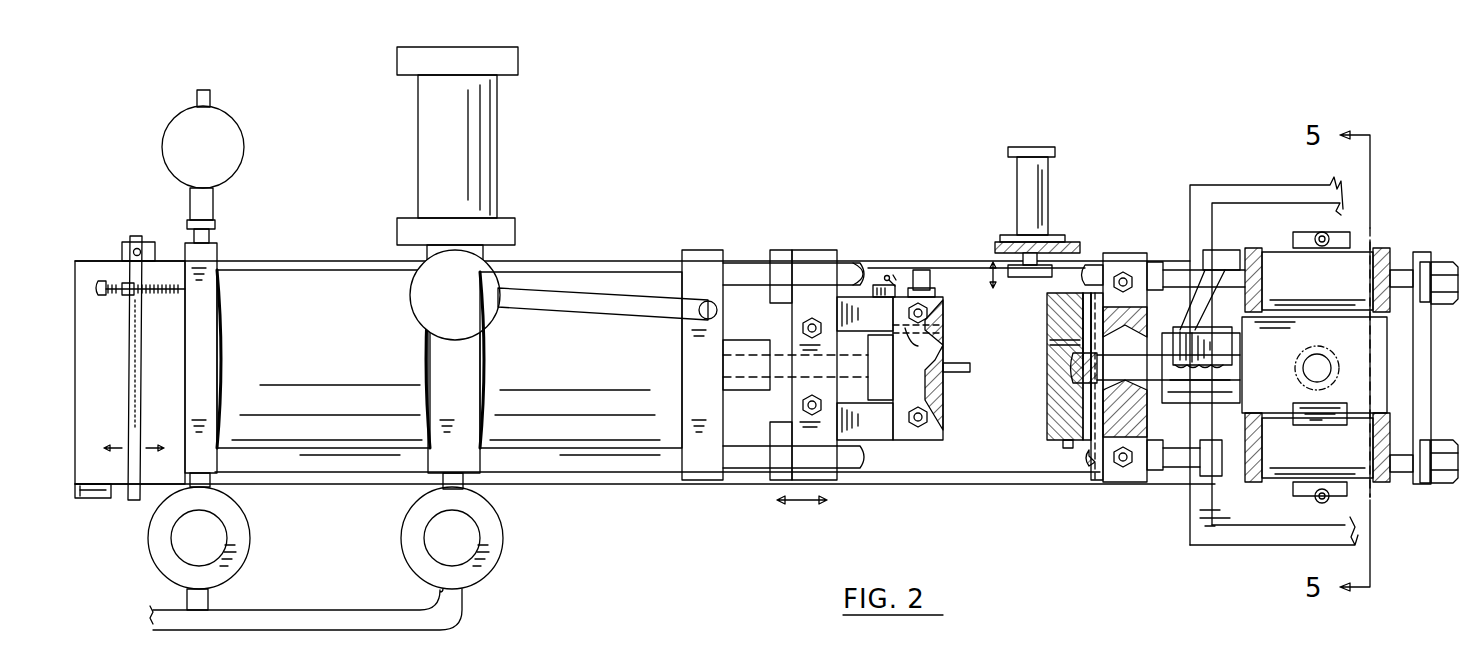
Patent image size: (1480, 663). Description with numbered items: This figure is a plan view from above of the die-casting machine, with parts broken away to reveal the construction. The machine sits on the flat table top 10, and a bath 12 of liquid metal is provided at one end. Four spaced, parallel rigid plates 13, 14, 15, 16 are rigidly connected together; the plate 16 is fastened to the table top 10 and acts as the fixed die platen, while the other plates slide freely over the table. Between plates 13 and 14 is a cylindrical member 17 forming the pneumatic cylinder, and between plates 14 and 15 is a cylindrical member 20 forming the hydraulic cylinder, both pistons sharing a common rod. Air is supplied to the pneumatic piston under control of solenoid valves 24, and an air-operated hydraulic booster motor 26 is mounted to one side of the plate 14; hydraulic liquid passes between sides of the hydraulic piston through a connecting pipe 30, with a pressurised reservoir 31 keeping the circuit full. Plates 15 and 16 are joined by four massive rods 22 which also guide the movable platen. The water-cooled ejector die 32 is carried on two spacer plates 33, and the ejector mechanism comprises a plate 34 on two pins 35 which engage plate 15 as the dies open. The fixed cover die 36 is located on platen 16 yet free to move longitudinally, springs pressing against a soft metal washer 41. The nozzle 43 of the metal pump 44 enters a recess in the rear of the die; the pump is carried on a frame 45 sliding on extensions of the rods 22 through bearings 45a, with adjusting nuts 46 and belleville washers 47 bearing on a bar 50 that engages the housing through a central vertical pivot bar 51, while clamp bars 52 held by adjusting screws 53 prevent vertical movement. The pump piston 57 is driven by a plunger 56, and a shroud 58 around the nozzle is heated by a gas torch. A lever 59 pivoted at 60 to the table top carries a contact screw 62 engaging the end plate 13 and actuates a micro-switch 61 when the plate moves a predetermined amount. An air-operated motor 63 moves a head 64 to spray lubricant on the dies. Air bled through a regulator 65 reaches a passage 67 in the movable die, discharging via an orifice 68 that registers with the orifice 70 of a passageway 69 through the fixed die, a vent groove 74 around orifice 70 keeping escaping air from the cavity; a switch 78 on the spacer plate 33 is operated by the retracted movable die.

The table top 10 is at (316, 266).
The bath 12 is at (1206, 550).
The end plate 13 is at (222, 366).
The plate 14 is at (472, 377).
The plate 15 is at (720, 377).
The fixed die platen 16 is at (1125, 484).
The pneumatic cylinder 17 is at (334, 366).
The hydraulic cylinder 20 is at (592, 364).
The rods 22 is at (747, 268).
The solenoid valves 24 is at (246, 542).
The air-operated hydraulic booster motor 26 is at (497, 148).
The connecting pipe 30 is at (600, 290).
The pressurised reservoir 31 is at (474, 307).
The ejector die mould part 32 is at (934, 440).
The spacer plates 33 is at (862, 298).
The ejector plate 34 is at (893, 386).
The pins 35 is at (758, 378).
The cover die mould 36 is at (1046, 432).
The soft metal washer 41 is at (1094, 470).
The nozzle 43 is at (1130, 393).
The metal pump 44 is at (1285, 377).
The frame 45 is at (1258, 245).
The bearings 45a is at (1343, 287).
The adjusting nuts 46 is at (1443, 262).
The belleville washers 47 is at (1424, 262).
The bar 50 is at (1412, 372).
The central vertical pivot bar 51 is at (1395, 368).
The clamp bars 52 is at (1297, 500).
The adjusting screws 53 is at (1322, 230).
The plunger 56 is at (1302, 385).
The pump piston 57 is at (1320, 366).
The shroud 58 is at (1185, 320).
The lever 59 is at (132, 346).
The pivot 60 is at (137, 248).
The micro-switch 61 is at (90, 498).
The contact screw 62 is at (116, 296).
The air-operated motor 63 is at (1048, 180).
The spray head 64 is at (1052, 268).
The regulator 65 is at (232, 130).
The passage 67 is at (940, 341).
The orifice 68 is at (935, 326).
The passageway 69 is at (1062, 326).
The orifice 70 is at (1052, 335).
The vent groove 74 is at (1070, 368).
The switch 78 is at (893, 290).